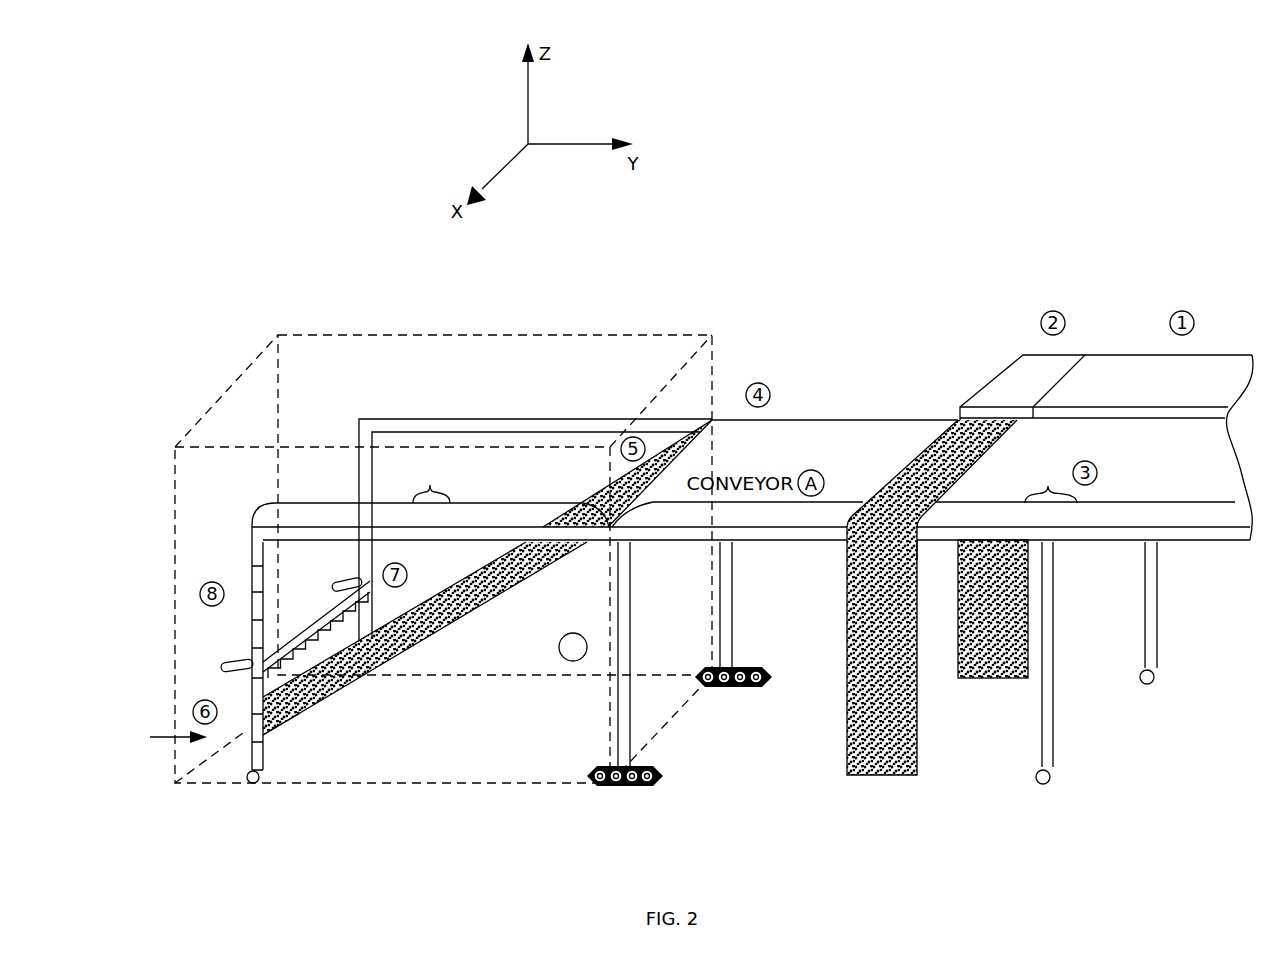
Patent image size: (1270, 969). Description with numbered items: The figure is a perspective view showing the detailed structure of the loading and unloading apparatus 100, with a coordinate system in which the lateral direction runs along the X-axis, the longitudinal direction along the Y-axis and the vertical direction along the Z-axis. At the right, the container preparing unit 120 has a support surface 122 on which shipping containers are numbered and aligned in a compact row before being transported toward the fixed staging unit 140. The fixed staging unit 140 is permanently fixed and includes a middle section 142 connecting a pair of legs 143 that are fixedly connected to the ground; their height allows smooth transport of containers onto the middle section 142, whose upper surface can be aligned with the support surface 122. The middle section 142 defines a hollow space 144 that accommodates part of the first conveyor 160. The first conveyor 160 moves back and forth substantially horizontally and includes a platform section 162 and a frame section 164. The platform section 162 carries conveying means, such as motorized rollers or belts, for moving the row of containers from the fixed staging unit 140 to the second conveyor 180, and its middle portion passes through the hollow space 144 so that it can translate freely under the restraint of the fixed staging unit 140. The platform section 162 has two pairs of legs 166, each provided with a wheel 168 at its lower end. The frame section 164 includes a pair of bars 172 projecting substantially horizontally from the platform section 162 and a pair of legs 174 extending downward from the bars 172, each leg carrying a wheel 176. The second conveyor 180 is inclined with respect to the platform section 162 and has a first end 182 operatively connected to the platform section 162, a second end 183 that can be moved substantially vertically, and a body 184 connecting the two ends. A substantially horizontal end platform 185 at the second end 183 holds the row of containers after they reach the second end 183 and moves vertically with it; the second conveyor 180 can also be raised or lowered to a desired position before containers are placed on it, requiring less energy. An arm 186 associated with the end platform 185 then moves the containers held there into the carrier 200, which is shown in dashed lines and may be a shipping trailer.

The loading and unloading apparatus 100 is at (1116, 266).
The container preparing unit 120 is at (1145, 368).
The support surface 122 is at (1015, 368).
The fixed staging unit 140 is at (897, 776).
The middle section 142 is at (937, 445).
The legs 143 is at (917, 712).
The hollow space 144 is at (925, 562).
The first conveyor 160 is at (826, 400).
The platform section 162 is at (1051, 482).
The frame section 164 is at (431, 480).
The legs 166 is at (733, 592).
The wheel 168 is at (641, 786).
The bars 172 is at (506, 432).
The legs 174 is at (359, 466).
The wheel 176 is at (253, 784).
The second conveyor 180 is at (518, 554).
The first end 182 is at (680, 437).
The second end 183 is at (285, 725).
The body 184 is at (517, 582).
The end platform 185 is at (243, 735).
The arm 186 is at (320, 617).
The carrier 200 is at (352, 334).